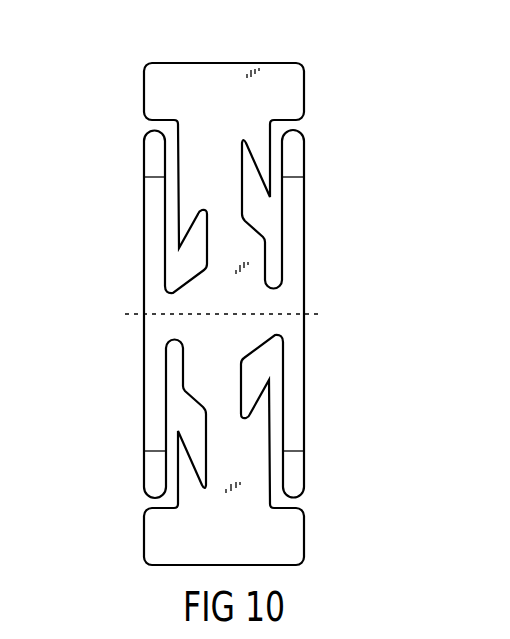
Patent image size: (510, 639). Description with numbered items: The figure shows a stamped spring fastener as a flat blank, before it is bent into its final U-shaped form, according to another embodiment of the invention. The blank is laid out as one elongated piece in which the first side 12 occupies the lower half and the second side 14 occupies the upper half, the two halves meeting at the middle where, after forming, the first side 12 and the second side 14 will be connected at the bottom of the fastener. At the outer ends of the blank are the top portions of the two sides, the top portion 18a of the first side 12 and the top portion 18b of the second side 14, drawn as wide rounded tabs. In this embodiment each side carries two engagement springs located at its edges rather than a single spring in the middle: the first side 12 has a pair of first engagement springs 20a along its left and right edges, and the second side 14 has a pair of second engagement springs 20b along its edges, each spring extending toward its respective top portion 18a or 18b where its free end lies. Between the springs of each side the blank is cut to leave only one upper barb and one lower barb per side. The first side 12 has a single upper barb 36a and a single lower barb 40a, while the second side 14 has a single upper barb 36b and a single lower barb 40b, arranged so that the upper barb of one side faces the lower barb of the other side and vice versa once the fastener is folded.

The first side 12 is at (107, 434).
The second side 14 is at (119, 153).
The top portion 18a is at (180, 540).
The top portion 18b is at (207, 72).
The first engagement spring 20a is at (152, 390).
The second engagement spring 20b is at (152, 199).
The upper barb 36a is at (183, 470).
The upper barb 36b is at (263, 153).
The lower barb 40a is at (263, 410).
The lower barb 40b is at (183, 229).